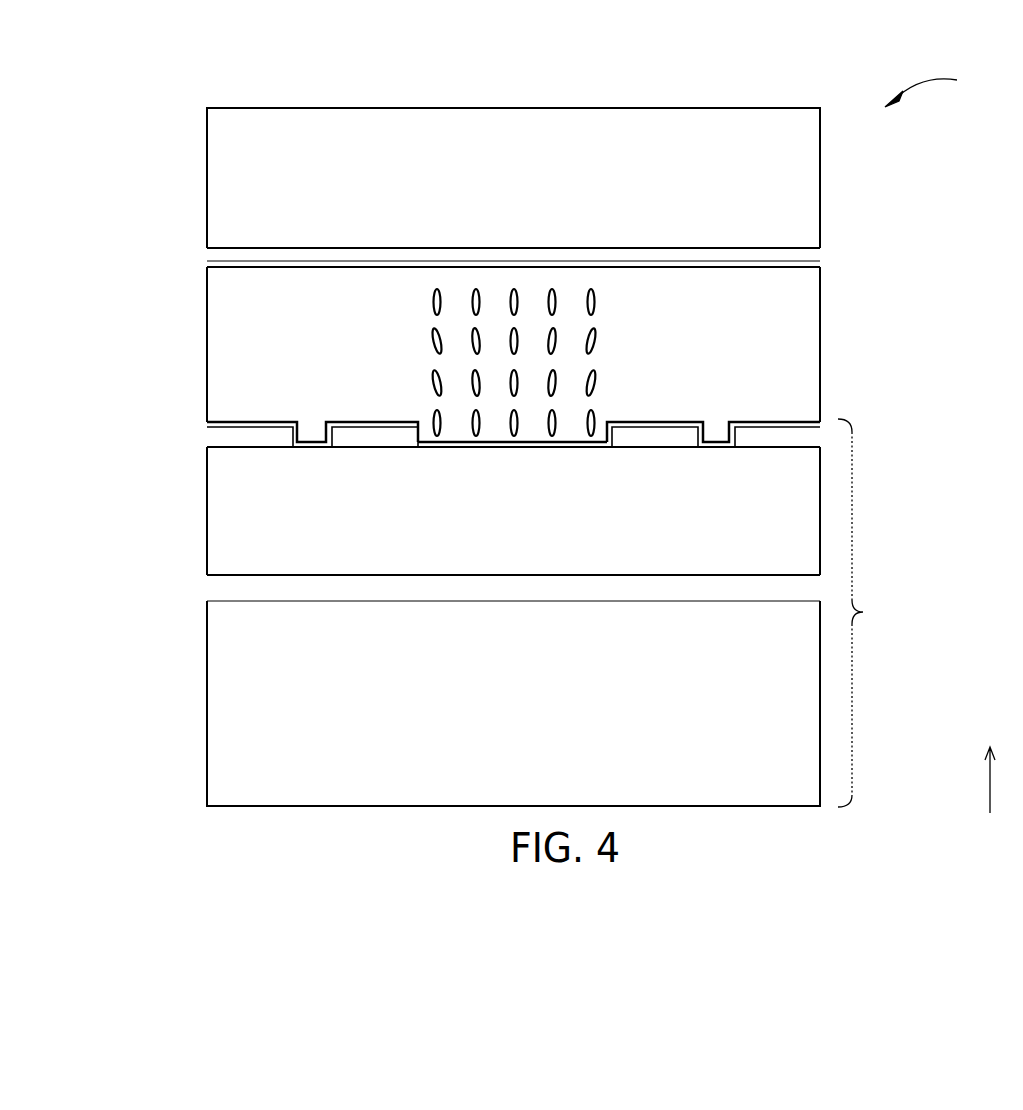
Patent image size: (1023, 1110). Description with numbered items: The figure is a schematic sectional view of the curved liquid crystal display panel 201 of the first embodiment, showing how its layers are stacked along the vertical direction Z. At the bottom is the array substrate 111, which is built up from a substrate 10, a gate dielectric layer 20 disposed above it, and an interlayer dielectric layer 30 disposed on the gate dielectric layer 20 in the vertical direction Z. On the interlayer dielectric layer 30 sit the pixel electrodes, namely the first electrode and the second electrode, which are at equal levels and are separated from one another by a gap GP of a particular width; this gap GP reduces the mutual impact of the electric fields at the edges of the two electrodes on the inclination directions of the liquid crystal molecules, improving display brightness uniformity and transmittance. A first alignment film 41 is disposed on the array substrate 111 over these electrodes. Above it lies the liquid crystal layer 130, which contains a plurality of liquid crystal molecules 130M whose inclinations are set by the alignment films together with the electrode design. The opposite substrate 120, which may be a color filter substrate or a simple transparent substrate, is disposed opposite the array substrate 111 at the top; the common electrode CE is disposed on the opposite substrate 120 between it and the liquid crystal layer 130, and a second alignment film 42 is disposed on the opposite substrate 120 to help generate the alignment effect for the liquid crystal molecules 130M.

The opposite substrate 120 is at (233, 177).
The common electrode CE is at (218, 253).
The second alignment film 42 is at (218, 262).
The liquid crystal layer 130 is at (233, 312).
The liquid crystal molecules 130M is at (598, 333).
The first alignment film 41 is at (233, 424).
The gap GP is at (498, 433).
The interlayer dielectric layer 30 is at (233, 511).
The gate dielectric layer 20 is at (233, 588).
The substrate 10 is at (233, 703).
The array substrate 111 is at (871, 613).
The curved liquid crystal display panel 201 is at (940, 86).
The vertical direction Z is at (990, 766).